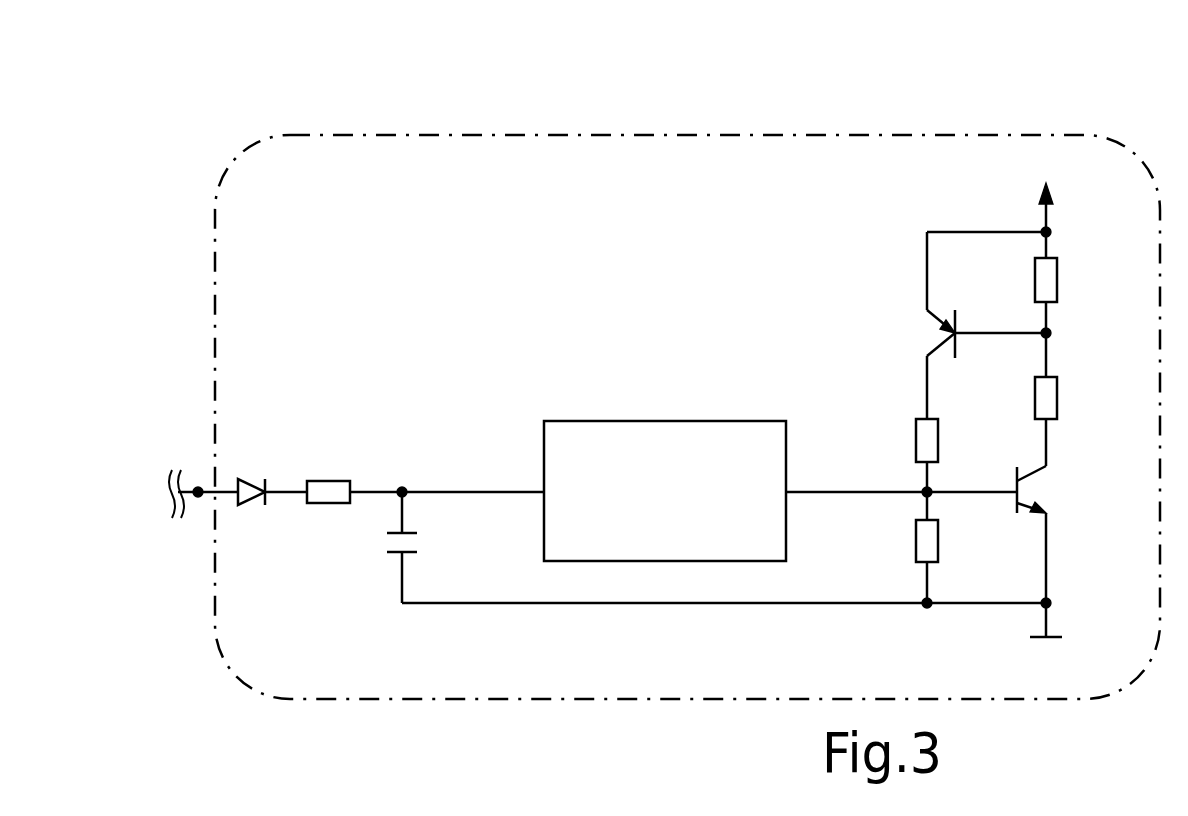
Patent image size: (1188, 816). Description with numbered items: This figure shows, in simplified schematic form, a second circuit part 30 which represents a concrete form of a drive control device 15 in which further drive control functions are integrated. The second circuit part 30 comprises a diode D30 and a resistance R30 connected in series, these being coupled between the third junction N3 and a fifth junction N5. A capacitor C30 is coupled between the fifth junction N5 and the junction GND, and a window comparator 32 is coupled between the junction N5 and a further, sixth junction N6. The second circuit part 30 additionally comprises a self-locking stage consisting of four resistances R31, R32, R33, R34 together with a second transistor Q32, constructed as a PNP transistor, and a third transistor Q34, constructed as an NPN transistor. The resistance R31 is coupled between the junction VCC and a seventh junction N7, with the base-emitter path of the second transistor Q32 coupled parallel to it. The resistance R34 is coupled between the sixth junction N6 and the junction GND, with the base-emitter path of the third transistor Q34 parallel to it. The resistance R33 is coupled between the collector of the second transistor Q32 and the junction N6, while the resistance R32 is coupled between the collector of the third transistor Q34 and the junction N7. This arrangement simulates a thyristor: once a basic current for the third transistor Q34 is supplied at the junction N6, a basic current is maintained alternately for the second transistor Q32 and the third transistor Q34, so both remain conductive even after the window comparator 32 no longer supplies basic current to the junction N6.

The second circuit part 30 is at (510, 96).
The drive control device 15 is at (750, 233).
The window comparator 32 is at (694, 421).
The third junction N3 is at (197, 499).
The diode D30 is at (255, 479).
The resistance R30 is at (328, 478).
The fifth junction N5 is at (404, 490).
The capacitor C30 is at (427, 547).
The sixth junction N6 is at (921, 489).
The resistance R33 is at (950, 424).
The resistance R34 is at (950, 550).
The second transistor Q32 is at (960, 295).
The junction Vcc VCC is at (994, 198).
The resistance R31 is at (1068, 282).
The seventh junction N7 is at (1052, 333).
The resistance R32 is at (1069, 399).
The third transistor Q34 is at (1053, 534).
The junction GND is at (1054, 635).